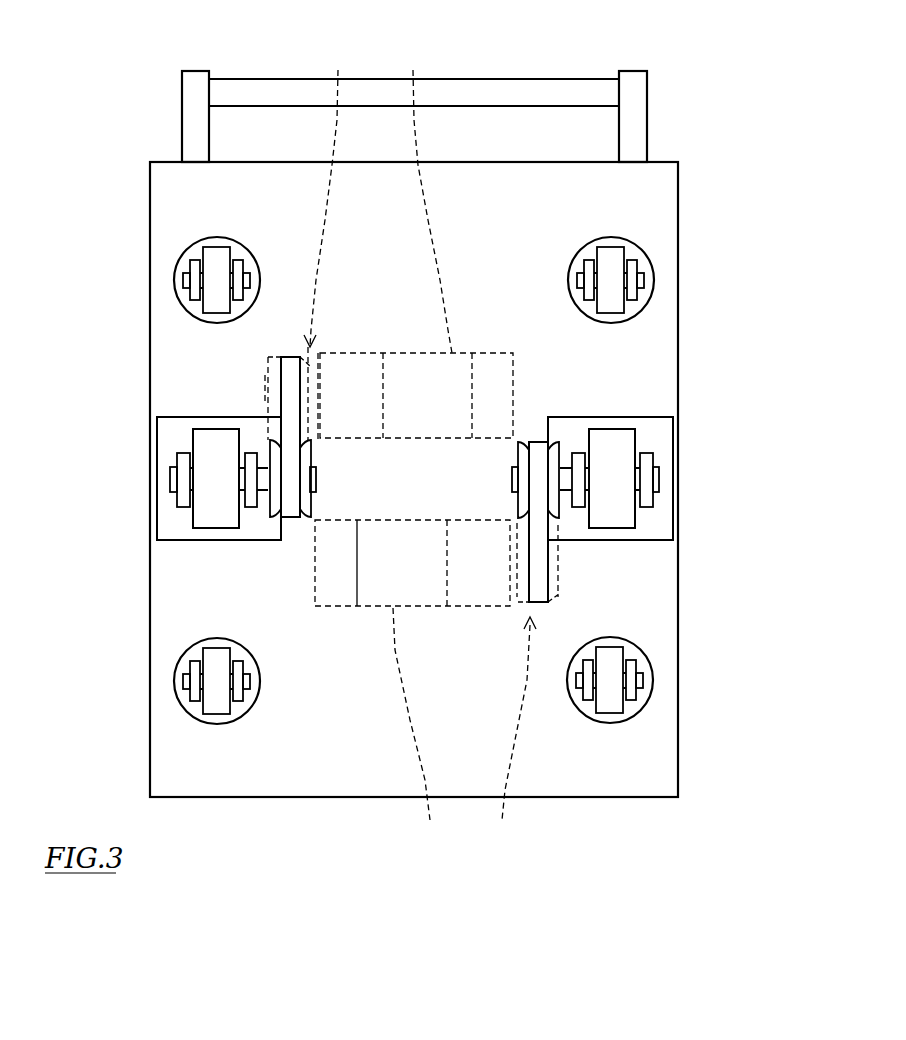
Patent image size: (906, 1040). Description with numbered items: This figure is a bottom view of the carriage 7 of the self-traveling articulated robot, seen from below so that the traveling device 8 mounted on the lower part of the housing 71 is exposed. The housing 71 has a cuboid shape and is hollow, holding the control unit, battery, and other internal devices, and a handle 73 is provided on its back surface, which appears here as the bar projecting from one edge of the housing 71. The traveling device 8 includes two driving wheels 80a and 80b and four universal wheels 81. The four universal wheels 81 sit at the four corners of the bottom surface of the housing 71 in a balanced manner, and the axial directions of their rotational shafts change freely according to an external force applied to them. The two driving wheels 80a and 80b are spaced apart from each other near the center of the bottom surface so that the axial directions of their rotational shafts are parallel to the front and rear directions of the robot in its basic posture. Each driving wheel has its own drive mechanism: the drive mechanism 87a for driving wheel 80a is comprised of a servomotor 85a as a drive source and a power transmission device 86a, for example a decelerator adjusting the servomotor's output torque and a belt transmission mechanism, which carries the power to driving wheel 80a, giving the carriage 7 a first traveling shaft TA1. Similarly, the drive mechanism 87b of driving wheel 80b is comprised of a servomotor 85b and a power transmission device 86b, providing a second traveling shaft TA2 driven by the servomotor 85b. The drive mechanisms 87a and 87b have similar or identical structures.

The carriage 7 is at (448, 479).
The traveling device 8 is at (182, 337).
The housing 71 is at (678, 175).
The handle 73 is at (647, 120).
The universal wheels 81 is at (205, 253).
The driving wheel 80a is at (180, 443).
The driving wheel 80b is at (654, 500).
The first traveling shaft TA1 is at (163, 475).
The second traveling shaft TA2 is at (662, 480).
The servomotor 85a is at (426, 198).
The power transmission device 86a is at (339, 195).
The drive mechanism 87a is at (408, 219).
The servomotor 85b is at (429, 731).
The power transmission device 86b is at (514, 735).
The drive mechanism 87b is at (427, 711).